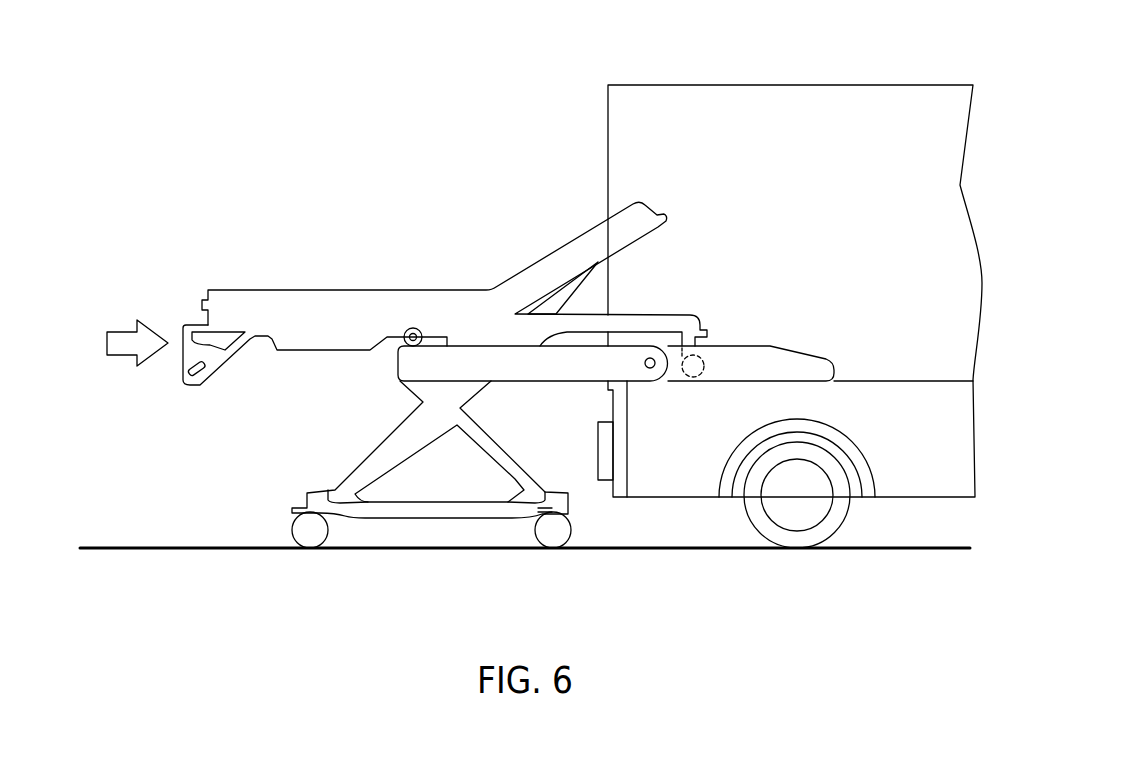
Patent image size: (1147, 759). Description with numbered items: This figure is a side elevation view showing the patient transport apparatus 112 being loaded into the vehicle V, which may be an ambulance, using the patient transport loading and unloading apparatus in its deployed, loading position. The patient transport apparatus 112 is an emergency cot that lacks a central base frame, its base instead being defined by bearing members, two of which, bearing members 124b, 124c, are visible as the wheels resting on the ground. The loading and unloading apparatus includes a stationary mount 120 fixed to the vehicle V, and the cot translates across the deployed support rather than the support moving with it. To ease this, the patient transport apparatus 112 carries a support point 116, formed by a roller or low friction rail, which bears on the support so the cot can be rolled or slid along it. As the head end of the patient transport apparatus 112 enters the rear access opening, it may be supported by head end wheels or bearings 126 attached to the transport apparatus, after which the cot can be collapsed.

The vehicle V is at (787, 108).
The patient transport apparatus 112 is at (444, 218).
The support point 116 is at (398, 344).
The stationary mount 120 is at (764, 358).
The head end wheels or bearings 126 is at (692, 383).
The bearing member 124b is at (310, 540).
The bearing member 124c is at (550, 545).